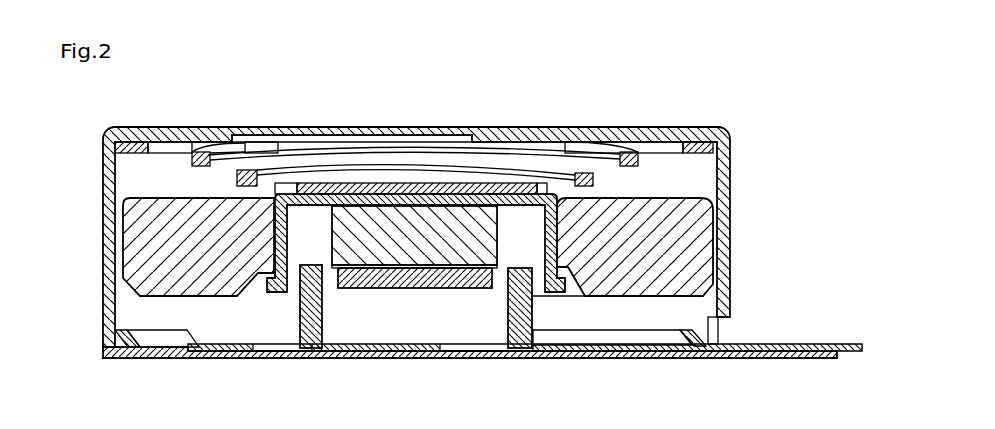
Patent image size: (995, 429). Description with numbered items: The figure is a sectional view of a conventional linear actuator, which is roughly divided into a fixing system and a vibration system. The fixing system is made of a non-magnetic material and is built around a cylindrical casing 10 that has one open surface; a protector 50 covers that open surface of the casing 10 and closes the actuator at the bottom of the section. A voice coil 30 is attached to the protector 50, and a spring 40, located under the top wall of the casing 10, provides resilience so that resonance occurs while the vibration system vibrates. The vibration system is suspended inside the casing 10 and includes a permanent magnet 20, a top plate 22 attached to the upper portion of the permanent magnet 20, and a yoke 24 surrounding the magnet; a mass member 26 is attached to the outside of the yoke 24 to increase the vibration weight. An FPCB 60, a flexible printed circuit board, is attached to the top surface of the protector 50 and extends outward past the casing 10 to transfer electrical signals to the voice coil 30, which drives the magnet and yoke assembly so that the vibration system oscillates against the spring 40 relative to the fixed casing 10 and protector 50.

The casing 10 is at (732, 199).
The permanent magnet 20 is at (392, 260).
The top plate 22 is at (350, 290).
The yoke 24 is at (290, 235).
The mass member 26 is at (630, 287).
The voice coil 30 is at (508, 320).
The spring 40 is at (715, 152).
The protector 50 is at (162, 357).
The FPCB 60 is at (798, 344).